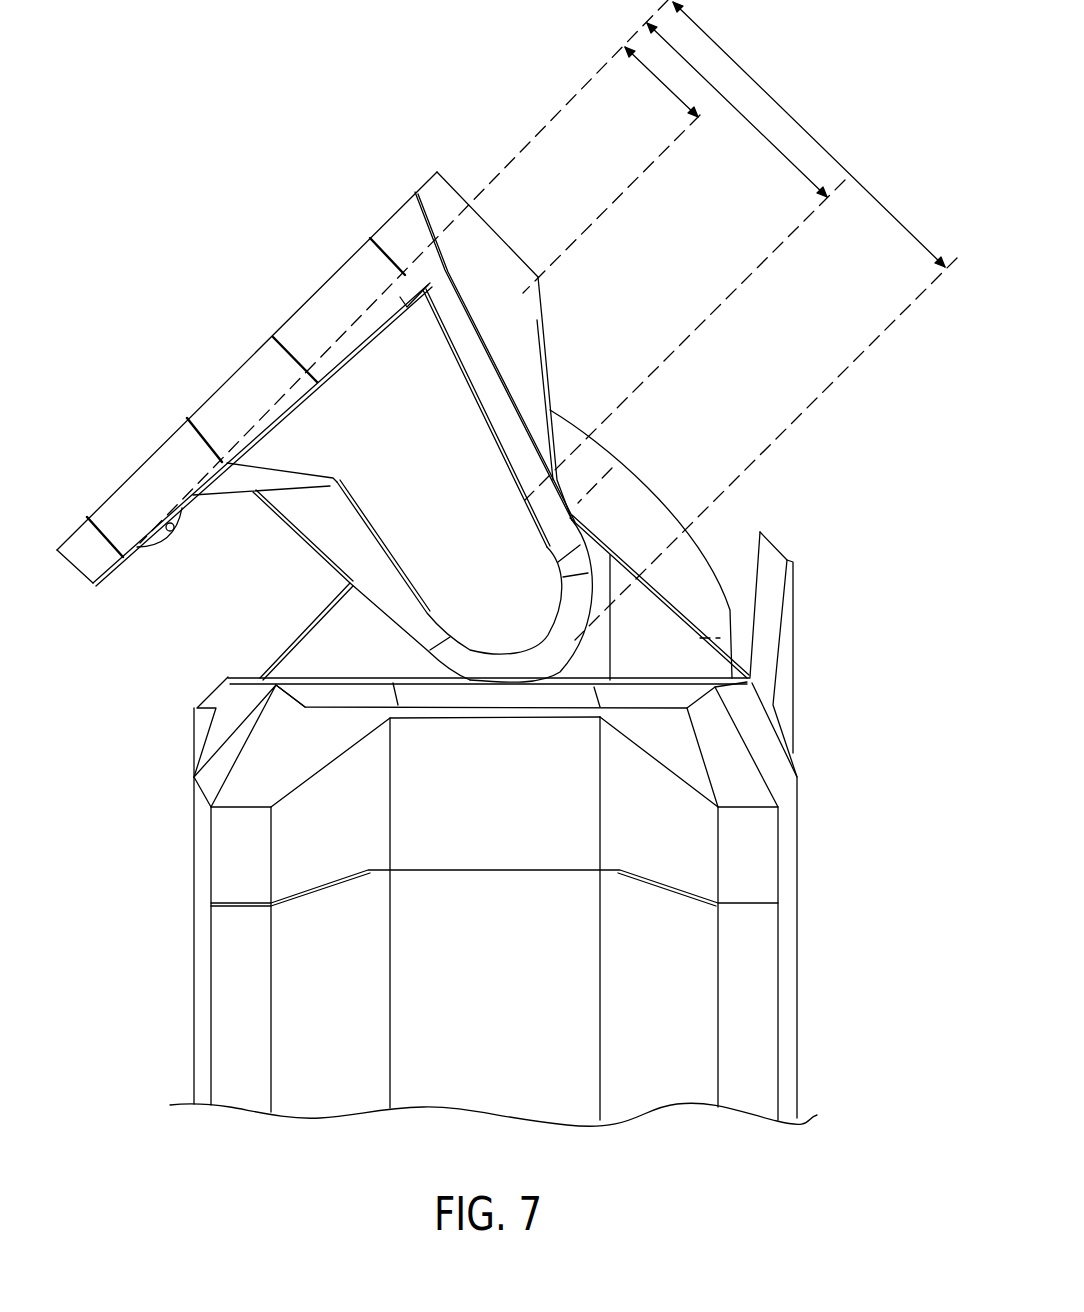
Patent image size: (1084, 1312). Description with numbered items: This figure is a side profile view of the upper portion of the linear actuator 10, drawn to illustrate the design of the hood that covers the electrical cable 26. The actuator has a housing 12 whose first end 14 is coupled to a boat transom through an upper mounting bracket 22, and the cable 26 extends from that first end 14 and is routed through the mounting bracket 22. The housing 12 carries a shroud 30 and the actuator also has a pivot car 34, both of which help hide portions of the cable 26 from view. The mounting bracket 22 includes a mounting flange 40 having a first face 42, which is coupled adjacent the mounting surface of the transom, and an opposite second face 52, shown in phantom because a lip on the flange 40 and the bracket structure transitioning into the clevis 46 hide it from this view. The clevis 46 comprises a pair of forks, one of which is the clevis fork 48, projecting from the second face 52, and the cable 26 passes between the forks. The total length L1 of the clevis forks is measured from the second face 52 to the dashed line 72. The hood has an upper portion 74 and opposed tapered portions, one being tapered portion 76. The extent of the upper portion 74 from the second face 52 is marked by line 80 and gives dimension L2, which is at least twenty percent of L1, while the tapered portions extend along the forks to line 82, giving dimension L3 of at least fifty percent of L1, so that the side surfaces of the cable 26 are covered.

The linear actuator 10 is at (150, 950).
The housing 12 is at (800, 940).
The first end 14 is at (241, 673).
The upper mounting bracket 22 is at (318, 288).
The cable 26 is at (620, 462).
The shroud 30 is at (820, 610).
The pivot car 34 is at (325, 607).
The mounting flange 40 is at (88, 566).
The first face 42 is at (187, 416).
The clevis 46 is at (474, 620).
The clevis fork 48 is at (477, 592).
The second face 52 is at (373, 307).
The dashed line 72 is at (824, 395).
The upper portion 74 is at (488, 222).
The tapered portion 76 is at (548, 385).
The line 80 is at (618, 200).
The line 82 is at (770, 258).
The total length of the clevis forks L1 is at (893, 222).
The extent of the upper portion of the hood L2 is at (660, 82).
The extent of the tapered portions L3 is at (763, 140).